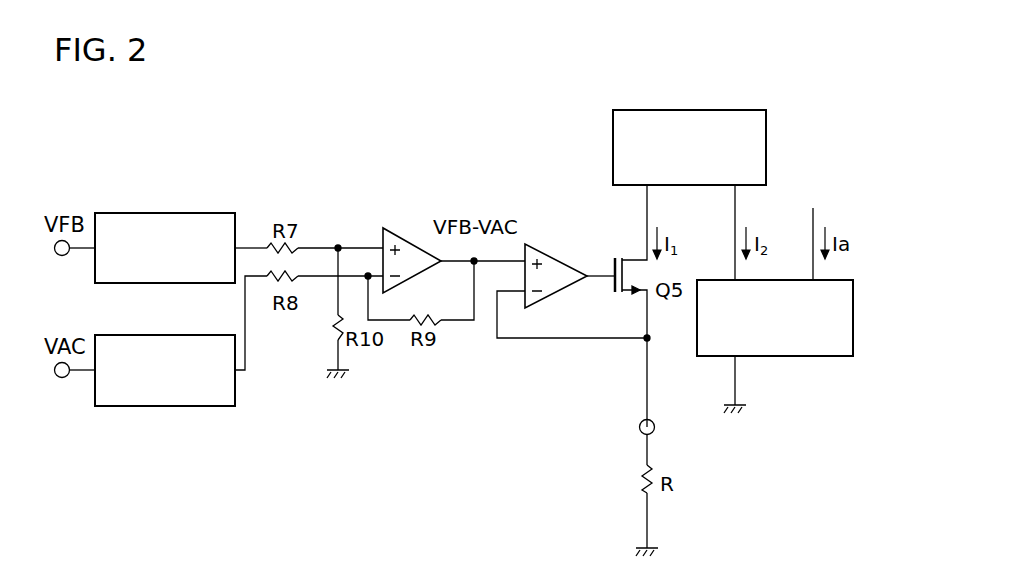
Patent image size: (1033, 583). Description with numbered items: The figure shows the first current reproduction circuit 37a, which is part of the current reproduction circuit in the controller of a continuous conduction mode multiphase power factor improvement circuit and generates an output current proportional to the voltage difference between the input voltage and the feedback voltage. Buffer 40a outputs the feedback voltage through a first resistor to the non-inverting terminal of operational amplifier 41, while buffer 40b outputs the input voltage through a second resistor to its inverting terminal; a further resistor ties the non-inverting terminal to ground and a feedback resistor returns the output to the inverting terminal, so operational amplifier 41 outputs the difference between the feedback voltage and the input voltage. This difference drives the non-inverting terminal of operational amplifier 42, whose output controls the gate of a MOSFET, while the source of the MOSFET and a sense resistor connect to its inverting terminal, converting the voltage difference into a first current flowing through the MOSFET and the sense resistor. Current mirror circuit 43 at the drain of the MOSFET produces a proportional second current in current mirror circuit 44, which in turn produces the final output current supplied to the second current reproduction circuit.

The first current reproduction circuit 37a is at (611, 66).
The buffer 40a is at (190, 213).
The buffer 40b is at (190, 335).
The operational amplifier 41 is at (393, 228).
The operational amplifier 42 is at (572, 238).
The current mirror circuit 43 is at (745, 110).
The current mirror circuit 44 is at (817, 356).